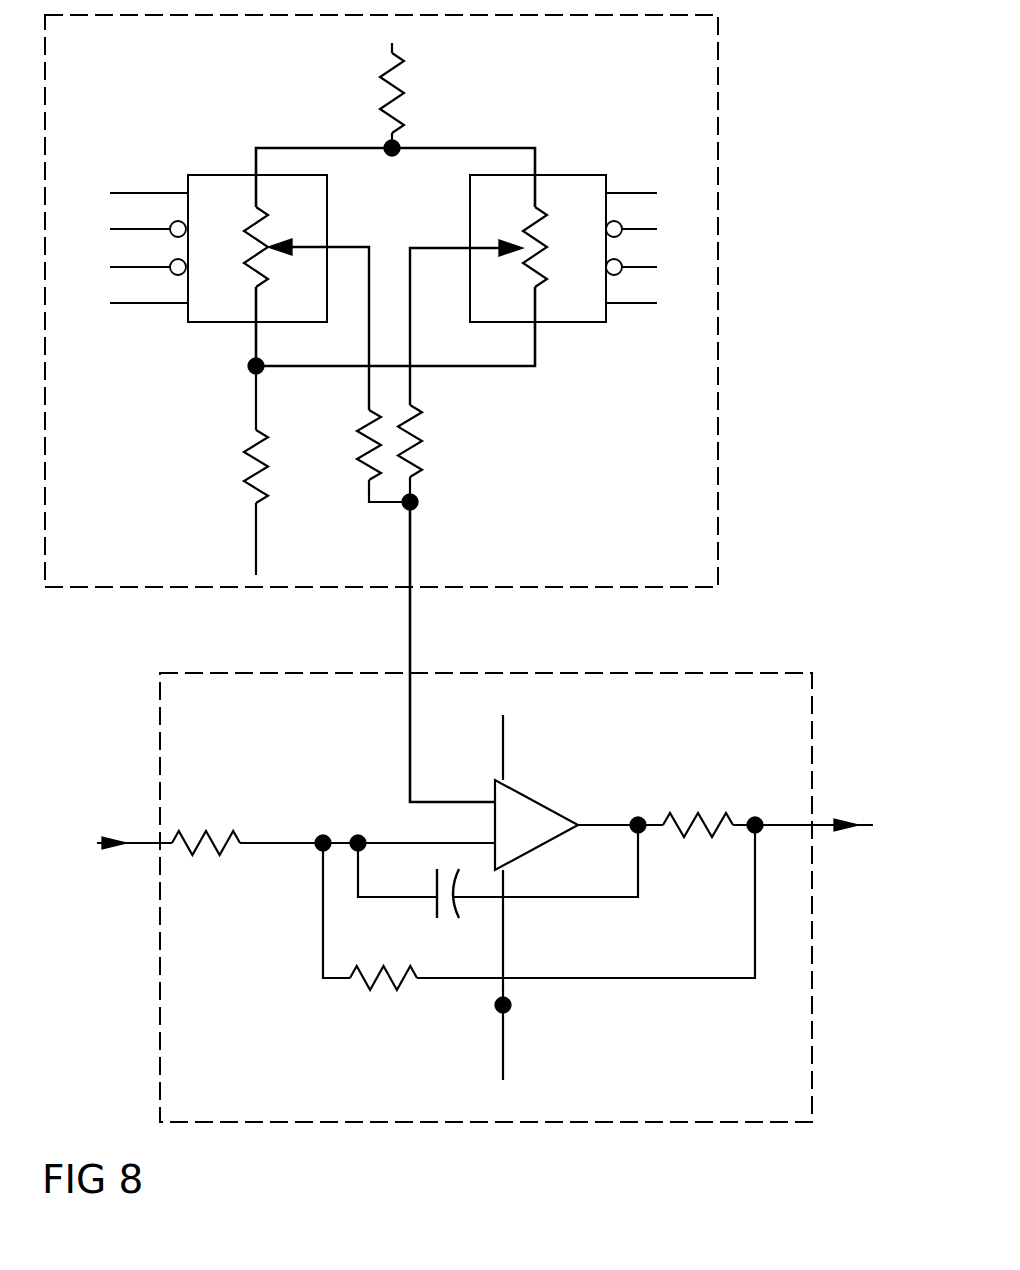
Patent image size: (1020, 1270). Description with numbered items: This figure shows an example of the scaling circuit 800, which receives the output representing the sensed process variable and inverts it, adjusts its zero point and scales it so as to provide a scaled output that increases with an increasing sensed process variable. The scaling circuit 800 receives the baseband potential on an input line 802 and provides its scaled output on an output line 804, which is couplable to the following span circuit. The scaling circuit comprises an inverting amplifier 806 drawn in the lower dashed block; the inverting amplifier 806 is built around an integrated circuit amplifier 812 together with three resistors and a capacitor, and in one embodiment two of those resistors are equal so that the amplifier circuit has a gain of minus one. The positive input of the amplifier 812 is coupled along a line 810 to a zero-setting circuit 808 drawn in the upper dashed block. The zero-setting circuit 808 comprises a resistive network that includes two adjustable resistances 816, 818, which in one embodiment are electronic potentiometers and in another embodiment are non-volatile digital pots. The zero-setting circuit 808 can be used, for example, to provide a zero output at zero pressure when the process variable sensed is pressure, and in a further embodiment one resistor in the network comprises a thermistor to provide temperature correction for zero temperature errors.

The scaling circuit 800 is at (788, 135).
The line 802 is at (133, 840).
The line 804 is at (826, 823).
The inverting amplifier 806 is at (607, 673).
The zero-setting circuit 808 is at (719, 372).
The line 810 is at (412, 628).
The integrated circuit amplifier 812 is at (536, 793).
The adjustable resistance 816 is at (565, 175).
The adjustable resistance 818 is at (210, 175).